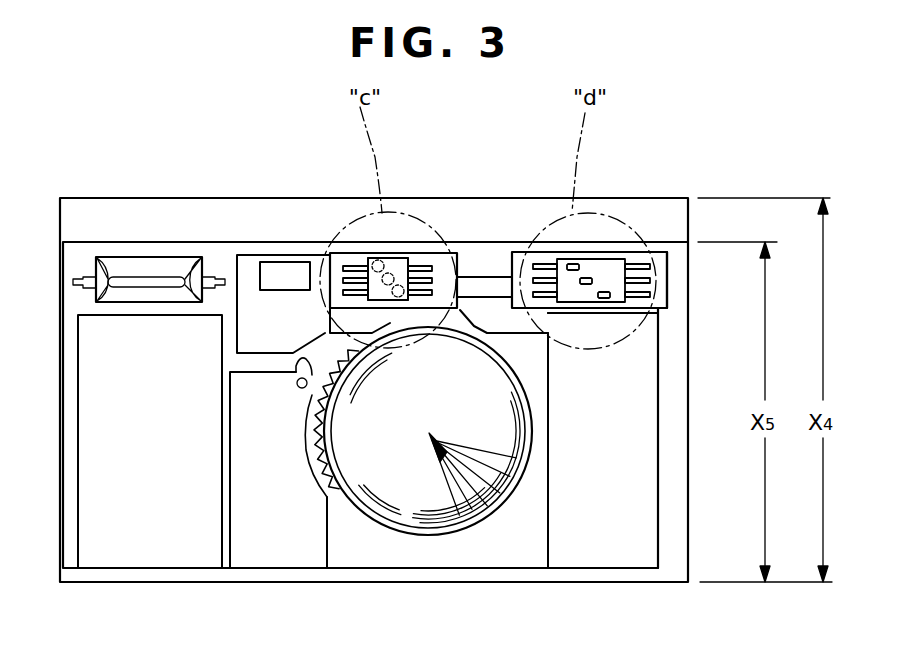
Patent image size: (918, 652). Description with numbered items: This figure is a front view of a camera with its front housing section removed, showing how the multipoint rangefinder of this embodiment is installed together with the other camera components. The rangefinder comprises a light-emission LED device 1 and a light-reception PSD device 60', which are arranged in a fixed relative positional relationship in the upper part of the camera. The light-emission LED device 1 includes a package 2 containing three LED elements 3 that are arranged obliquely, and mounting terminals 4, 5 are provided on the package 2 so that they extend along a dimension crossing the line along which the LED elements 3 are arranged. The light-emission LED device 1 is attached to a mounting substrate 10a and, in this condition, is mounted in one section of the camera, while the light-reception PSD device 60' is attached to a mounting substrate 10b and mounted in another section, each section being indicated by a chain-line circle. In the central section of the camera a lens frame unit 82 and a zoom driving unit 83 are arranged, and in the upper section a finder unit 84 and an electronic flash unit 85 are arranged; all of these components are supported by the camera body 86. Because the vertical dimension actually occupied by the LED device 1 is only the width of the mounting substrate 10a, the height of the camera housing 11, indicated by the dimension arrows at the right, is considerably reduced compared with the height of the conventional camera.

The light-emission LED device 1 is at (385, 256).
The package 2 is at (400, 266).
The LED elements 3 is at (372, 257).
The mounting terminal 4 is at (422, 265).
The mounting terminal 5 is at (357, 262).
The mounting substrate 10a is at (450, 256).
The mounting substrate 10b is at (656, 256).
The camera housing 11 is at (668, 257).
The light-reception PSD device 60' is at (593, 207).
The lens frame unit 82 is at (403, 492).
The zoom driving unit 83 is at (288, 550).
The finder unit 84 is at (250, 285).
The electronic flash unit 85 is at (125, 265).
The camera body 86 is at (613, 550).